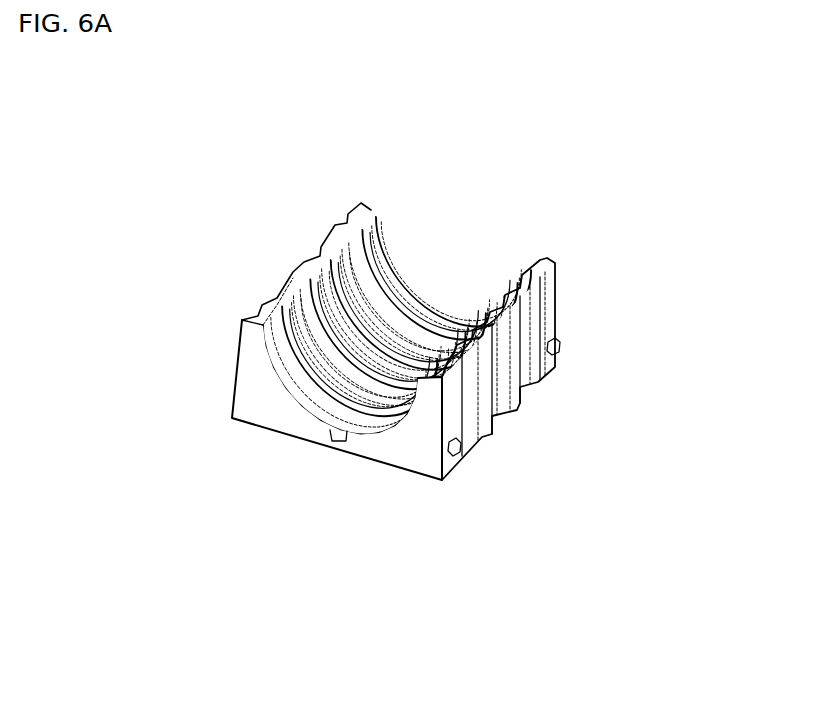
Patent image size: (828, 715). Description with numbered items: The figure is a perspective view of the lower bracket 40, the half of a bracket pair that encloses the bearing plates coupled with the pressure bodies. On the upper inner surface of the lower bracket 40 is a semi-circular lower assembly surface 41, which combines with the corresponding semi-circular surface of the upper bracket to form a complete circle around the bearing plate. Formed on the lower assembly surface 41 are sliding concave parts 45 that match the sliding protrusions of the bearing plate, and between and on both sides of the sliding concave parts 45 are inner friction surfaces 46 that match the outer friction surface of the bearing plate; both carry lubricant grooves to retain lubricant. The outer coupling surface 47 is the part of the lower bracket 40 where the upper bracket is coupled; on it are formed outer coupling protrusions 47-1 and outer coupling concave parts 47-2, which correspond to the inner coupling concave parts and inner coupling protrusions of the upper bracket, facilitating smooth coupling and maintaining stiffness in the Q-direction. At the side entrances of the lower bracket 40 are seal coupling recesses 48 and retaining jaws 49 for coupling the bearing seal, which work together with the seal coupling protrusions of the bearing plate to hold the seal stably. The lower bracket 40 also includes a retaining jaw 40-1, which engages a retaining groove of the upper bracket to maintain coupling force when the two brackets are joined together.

The lower bracket 40 is at (424, 345).
The retaining jaw 40-1 is at (558, 346).
The lower assembly surface 41 is at (432, 286).
The sliding concave part 45 is at (278, 285).
The inner friction surface 46 is at (379, 232).
The outer coupling surface 47 is at (542, 438).
The outer coupling protrusion 47-1 is at (484, 420).
The outer coupling concave part 47-2 is at (522, 408).
The seal coupling recess 48 is at (265, 298).
The retaining jaw 49 is at (283, 382).